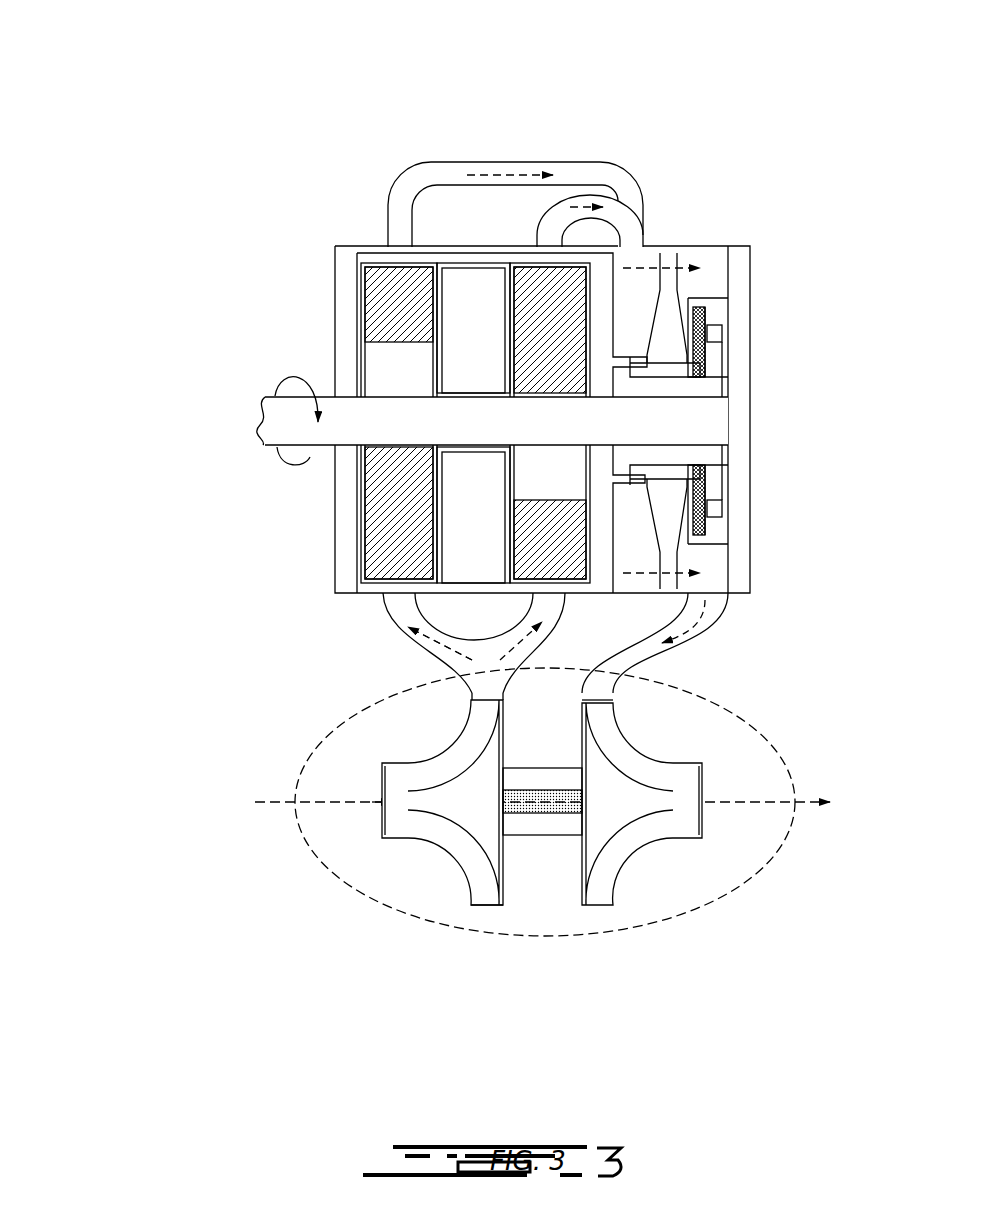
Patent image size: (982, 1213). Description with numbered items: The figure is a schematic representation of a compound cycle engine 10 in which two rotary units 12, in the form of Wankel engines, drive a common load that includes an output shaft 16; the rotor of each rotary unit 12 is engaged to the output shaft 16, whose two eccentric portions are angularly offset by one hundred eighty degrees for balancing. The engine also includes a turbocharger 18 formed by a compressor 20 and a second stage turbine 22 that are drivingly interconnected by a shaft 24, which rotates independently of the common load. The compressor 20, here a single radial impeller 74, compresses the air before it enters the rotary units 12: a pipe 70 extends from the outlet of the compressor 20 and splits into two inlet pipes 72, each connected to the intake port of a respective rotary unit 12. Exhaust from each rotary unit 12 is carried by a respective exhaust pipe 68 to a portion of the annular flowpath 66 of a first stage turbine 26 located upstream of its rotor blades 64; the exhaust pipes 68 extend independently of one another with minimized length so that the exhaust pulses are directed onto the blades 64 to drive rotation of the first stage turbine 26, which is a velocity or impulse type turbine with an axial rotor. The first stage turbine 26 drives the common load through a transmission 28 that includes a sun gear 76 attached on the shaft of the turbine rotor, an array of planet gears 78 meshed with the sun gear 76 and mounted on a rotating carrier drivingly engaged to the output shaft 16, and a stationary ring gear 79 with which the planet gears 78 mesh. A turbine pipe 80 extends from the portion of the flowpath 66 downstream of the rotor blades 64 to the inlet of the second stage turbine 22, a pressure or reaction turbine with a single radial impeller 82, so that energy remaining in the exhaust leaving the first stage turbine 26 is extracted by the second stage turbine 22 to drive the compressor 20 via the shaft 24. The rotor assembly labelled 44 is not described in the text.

The compound cycle engine 10 is at (203, 195).
The rotary unit 12 is at (355, 258).
The output shaft 16 is at (343, 427).
The turbocharger 18 is at (322, 890).
The compressor 20 is at (440, 803).
The second stage turbine 22 is at (620, 805).
The shaft 24 is at (540, 803).
The first stage turbine 26 is at (693, 247).
The transmission 28 is at (732, 343).
The electric motor 44 is at (548, 425).
The rotor blades 64 is at (672, 278).
The annular flowpath 66 is at (645, 243).
The exhaust pipe 68 is at (592, 202).
The pipe 70 is at (490, 688).
The inlet pipe 72 is at (397, 612).
The radial impeller 74 is at (447, 833).
The sun gear 76 is at (698, 364).
The planet gears 78 is at (722, 499).
The ring gear 79 is at (712, 535).
The turbine pipe 80 is at (697, 630).
The radial impeller 82 is at (637, 778).